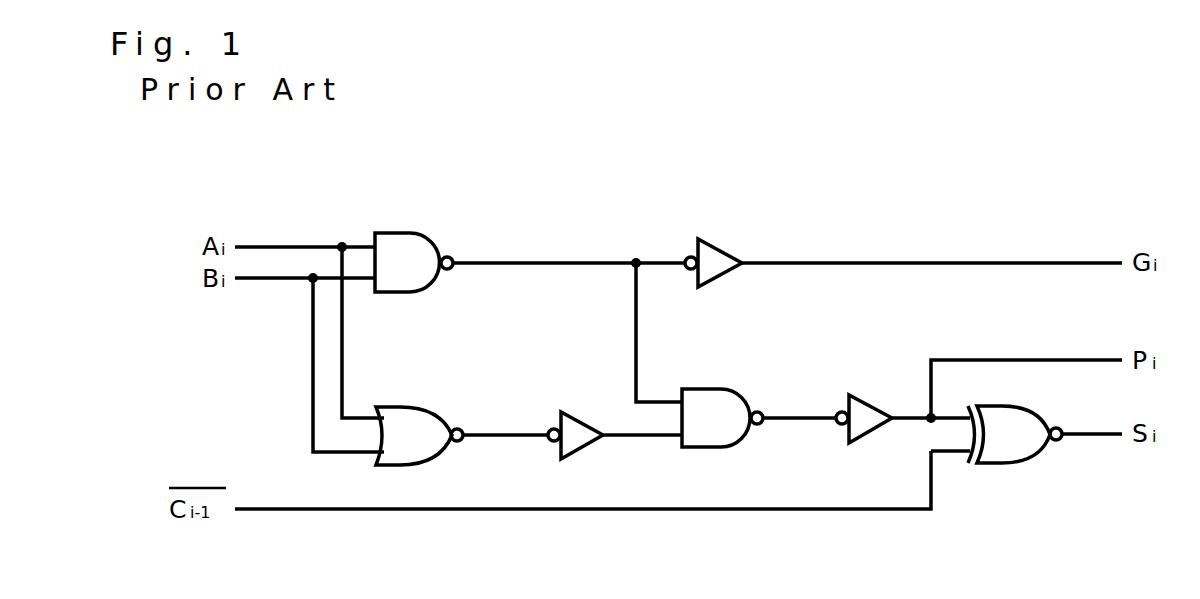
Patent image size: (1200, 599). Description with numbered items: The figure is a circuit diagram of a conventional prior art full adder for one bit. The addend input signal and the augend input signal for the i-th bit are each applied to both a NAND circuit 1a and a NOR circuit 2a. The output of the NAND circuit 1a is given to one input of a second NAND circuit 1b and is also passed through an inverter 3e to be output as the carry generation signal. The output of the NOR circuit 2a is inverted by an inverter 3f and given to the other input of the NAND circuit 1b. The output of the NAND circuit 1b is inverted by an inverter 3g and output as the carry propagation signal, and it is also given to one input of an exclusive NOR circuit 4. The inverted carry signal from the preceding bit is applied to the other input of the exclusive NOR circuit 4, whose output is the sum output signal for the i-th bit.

The NAND circuit 1a is at (433, 243).
The NAND circuit 1b is at (747, 400).
The NOR circuit 2a is at (418, 407).
The inverter 3e is at (730, 258).
The inverter 3f is at (580, 417).
The inverter 3g is at (867, 405).
The exclusive NOR circuit 4 is at (1012, 463).